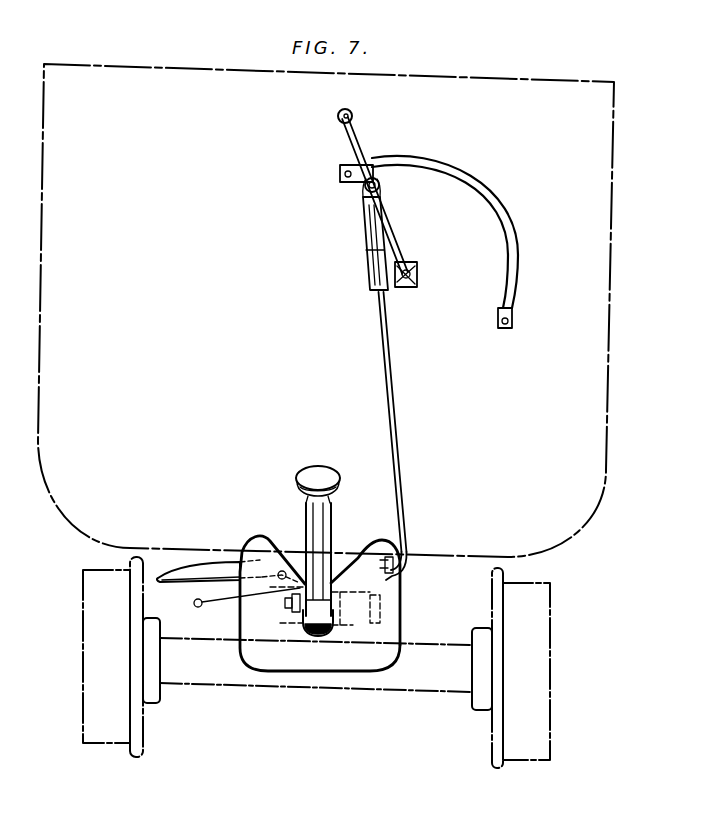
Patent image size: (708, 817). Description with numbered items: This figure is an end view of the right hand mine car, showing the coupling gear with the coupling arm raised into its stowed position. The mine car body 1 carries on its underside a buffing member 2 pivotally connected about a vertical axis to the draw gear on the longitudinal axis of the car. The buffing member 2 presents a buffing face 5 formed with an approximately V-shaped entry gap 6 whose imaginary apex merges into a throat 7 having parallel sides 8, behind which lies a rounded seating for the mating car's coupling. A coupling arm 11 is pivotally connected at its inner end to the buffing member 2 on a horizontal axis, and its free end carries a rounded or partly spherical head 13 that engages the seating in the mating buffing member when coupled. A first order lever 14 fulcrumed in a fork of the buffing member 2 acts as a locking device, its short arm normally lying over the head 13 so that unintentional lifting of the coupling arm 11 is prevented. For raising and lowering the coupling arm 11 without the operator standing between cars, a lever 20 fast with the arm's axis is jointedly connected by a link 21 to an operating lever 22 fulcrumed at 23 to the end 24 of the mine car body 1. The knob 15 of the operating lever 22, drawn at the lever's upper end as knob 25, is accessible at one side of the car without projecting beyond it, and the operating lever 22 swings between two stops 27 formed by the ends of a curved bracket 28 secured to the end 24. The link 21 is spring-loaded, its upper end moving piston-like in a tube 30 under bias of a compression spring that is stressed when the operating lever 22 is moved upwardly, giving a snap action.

The mine car body 1 is at (607, 180).
The buffing member 2 is at (403, 619).
The buffing face 5 is at (352, 658).
The entry gap 6 is at (338, 558).
The throat 7 is at (307, 640).
The parallel sides 8 is at (291, 598).
The coupling arm 11 is at (306, 516).
The head 13 is at (313, 471).
The first order lever 14 is at (205, 567).
The knob 15 is at (279, 572).
The lever 20 is at (403, 581).
The link 21 is at (399, 426).
The operating lever 22 is at (388, 223).
The fulcrum 23 is at (410, 284).
The end of the mine car 24 is at (174, 300).
The knob 25 is at (352, 112).
The stops 27 is at (340, 174).
The curved bracket 28 is at (468, 187).
The tube 30 is at (373, 260).